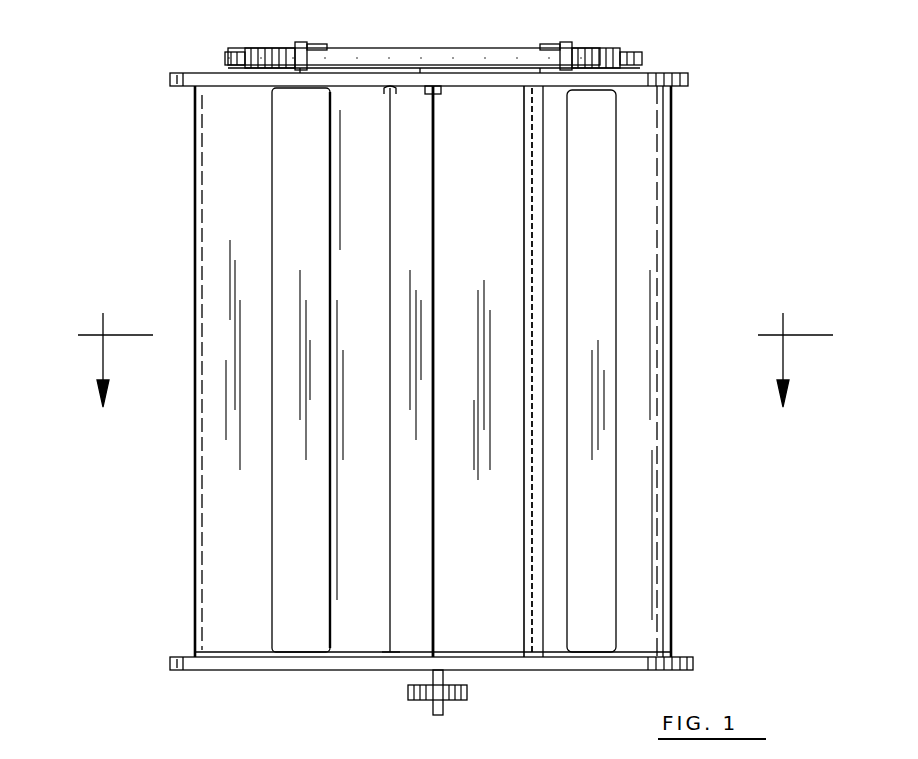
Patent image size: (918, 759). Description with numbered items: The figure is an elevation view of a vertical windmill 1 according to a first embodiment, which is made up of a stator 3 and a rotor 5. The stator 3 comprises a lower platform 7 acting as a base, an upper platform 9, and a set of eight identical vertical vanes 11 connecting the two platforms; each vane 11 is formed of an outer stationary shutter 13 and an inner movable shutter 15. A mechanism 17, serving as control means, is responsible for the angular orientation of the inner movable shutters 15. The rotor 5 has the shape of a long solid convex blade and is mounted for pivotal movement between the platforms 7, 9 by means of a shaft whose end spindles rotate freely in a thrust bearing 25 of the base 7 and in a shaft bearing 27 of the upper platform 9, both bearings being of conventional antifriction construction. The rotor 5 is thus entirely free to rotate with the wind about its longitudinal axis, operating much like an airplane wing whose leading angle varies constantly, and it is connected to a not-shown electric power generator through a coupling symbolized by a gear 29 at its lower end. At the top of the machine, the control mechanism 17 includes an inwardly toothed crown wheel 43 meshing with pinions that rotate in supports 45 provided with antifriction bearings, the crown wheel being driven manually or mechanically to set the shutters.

The vertical windmill 1 is at (712, 150).
The stator 3 is at (705, 69).
The rotor 5 is at (490, 628).
The lower platform 7 is at (178, 658).
The upper platform 9 is at (160, 70).
The vertical vanes 11 is at (322, 220).
The outer stationary shutter 13 is at (252, 562).
The inner movable shutter 15 is at (295, 613).
The mechanism 17 is at (462, 41).
The thrust bearing 25 is at (455, 665).
The shaft bearing 27 is at (450, 80).
The gear 29 is at (417, 698).
The inwardly toothed crown wheel 43 is at (388, 57).
The supports 45 is at (600, 46).